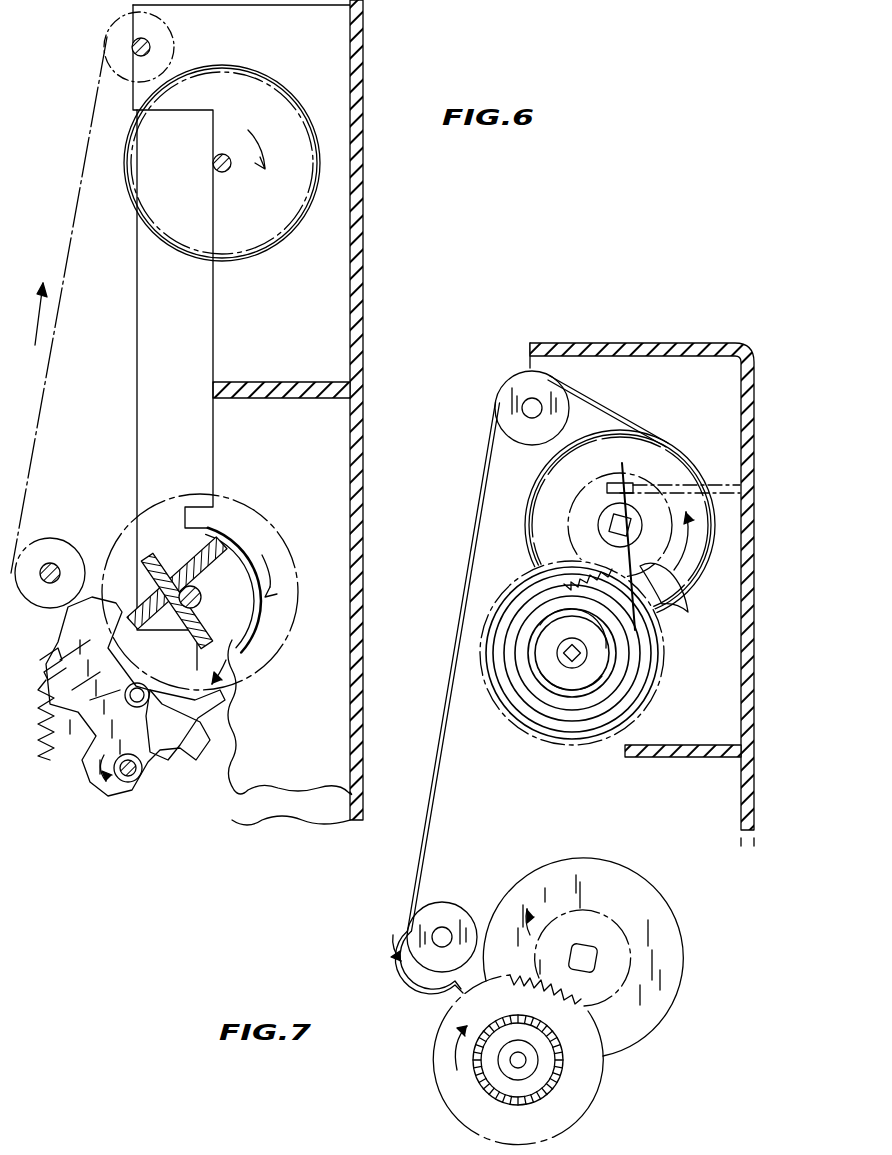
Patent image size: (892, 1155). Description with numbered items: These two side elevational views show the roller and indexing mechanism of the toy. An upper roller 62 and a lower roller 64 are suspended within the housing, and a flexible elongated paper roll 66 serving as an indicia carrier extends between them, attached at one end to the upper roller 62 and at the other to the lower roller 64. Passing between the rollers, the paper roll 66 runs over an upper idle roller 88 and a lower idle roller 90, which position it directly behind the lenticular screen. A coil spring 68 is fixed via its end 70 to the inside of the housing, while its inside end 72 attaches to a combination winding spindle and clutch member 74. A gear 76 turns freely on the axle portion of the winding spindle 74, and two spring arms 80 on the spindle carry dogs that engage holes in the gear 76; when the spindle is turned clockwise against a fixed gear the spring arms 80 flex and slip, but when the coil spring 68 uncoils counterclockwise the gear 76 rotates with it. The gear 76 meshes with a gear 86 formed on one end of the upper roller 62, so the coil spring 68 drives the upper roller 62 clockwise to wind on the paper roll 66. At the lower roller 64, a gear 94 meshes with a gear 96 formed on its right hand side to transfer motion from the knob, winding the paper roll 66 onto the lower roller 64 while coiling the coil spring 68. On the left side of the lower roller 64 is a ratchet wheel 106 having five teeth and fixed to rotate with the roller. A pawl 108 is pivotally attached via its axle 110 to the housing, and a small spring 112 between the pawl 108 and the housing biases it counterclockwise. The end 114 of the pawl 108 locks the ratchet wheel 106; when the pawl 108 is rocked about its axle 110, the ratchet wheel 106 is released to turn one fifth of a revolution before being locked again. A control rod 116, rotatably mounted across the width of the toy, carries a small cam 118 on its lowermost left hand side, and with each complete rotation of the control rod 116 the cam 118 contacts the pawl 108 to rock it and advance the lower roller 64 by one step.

In FIG. 6, the upper roller 62 is at (292, 178).
In FIG. 7, the upper roller 62 is at (652, 478).
In FIG. 6, the lower roller 64 is at (221, 592).
In FIG. 7, the lower roller 64 is at (644, 906).
In FIG. 6, the paper roll 66 is at (60, 318).
In FIG. 7, the paper roll 66 is at (428, 820).
In FIG. 7, the coil spring 68 is at (558, 674).
In FIG. 7, the end 70 is at (623, 468).
In FIG. 7, the inside end 72 is at (560, 690).
In FIG. 7, the winding spindle 74 is at (545, 690).
In FIG. 7, the gear 76 is at (578, 704).
In FIG. 7, the spring arms 80 is at (612, 644).
In FIG. 7, the gear 86 is at (662, 570).
In FIG. 6, the upper idle roller 88 is at (108, 46).
In FIG. 7, the upper idle roller 88 is at (510, 422).
In FIG. 6, the lower idle roller 90 is at (50, 548).
In FIG. 7, the lower idle roller 90 is at (483, 882).
In FIG. 7, the gear 94 is at (603, 1062).
In FIG. 7, the gear 96 is at (560, 1093).
In FIG. 6, the ratchet wheel 106 is at (258, 592).
In FIG. 6, the pawl 108 is at (83, 735).
In FIG. 6, the axle 110 is at (170, 735).
In FIG. 6, the small spring 112 is at (42, 750).
In FIG. 6, the end 114 is at (232, 690).
In FIG. 6, the control rod 116 is at (126, 582).
In FIG. 6, the cam 118 is at (112, 790).